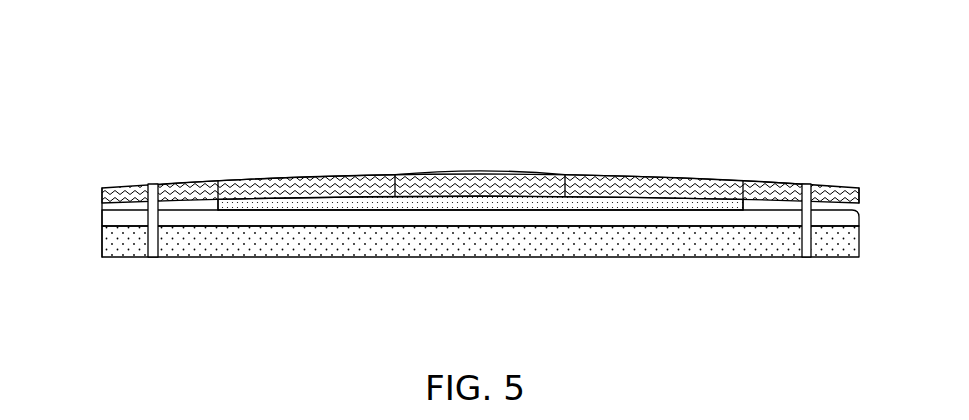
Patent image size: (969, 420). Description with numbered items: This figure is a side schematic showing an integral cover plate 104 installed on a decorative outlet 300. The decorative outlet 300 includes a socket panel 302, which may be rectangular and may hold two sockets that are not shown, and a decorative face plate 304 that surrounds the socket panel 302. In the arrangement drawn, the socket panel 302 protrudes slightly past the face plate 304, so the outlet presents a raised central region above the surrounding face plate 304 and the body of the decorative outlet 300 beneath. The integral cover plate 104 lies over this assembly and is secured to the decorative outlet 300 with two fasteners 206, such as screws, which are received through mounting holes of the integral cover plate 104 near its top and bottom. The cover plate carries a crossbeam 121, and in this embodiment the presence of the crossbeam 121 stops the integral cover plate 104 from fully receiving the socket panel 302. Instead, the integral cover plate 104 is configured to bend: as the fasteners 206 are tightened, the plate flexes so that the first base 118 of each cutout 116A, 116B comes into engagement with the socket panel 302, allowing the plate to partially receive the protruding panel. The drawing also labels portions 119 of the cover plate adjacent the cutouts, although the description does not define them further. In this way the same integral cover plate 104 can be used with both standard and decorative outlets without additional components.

The integral cover plate 104 is at (546, 137).
The cutout 116A is at (298, 98).
The cutout 116B is at (703, 118).
The first base 118 is at (217, 170).
The intermediate segment 119 is at (398, 165).
The crossbeam 121 is at (497, 177).
The fastener 206 is at (150, 183).
The decorative outlet 300 is at (230, 248).
The socket panel 302 is at (320, 204).
The decorative face plate 304 is at (128, 217).